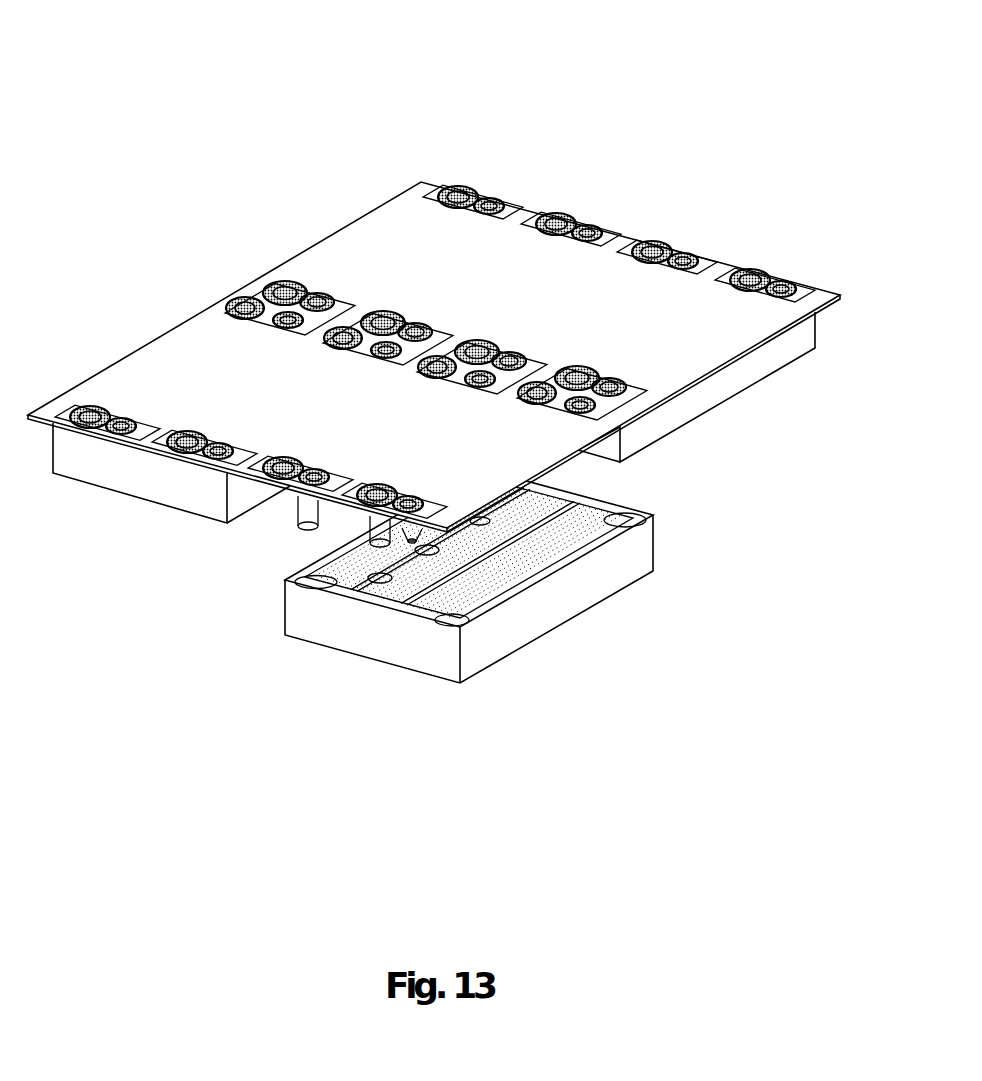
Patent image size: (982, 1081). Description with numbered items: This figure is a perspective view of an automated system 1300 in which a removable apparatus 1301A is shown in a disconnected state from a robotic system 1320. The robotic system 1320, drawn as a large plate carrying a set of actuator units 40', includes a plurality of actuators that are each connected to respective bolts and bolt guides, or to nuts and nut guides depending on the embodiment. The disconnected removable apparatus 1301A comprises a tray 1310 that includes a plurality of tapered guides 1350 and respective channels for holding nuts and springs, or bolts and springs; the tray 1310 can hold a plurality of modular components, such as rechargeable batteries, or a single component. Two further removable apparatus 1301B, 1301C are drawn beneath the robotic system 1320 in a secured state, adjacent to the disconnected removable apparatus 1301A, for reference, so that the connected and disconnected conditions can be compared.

The automated system 1300 is at (278, 56).
The robotic system 1320 is at (148, 257).
The component board with contacts 40' is at (435, 351).
The removable apparatus 1301A is at (352, 698).
The removable apparatus 1301B is at (134, 524).
The removable apparatus 1301C is at (734, 424).
The tray 1310 is at (552, 674).
The tapered guides 1350 is at (300, 604).